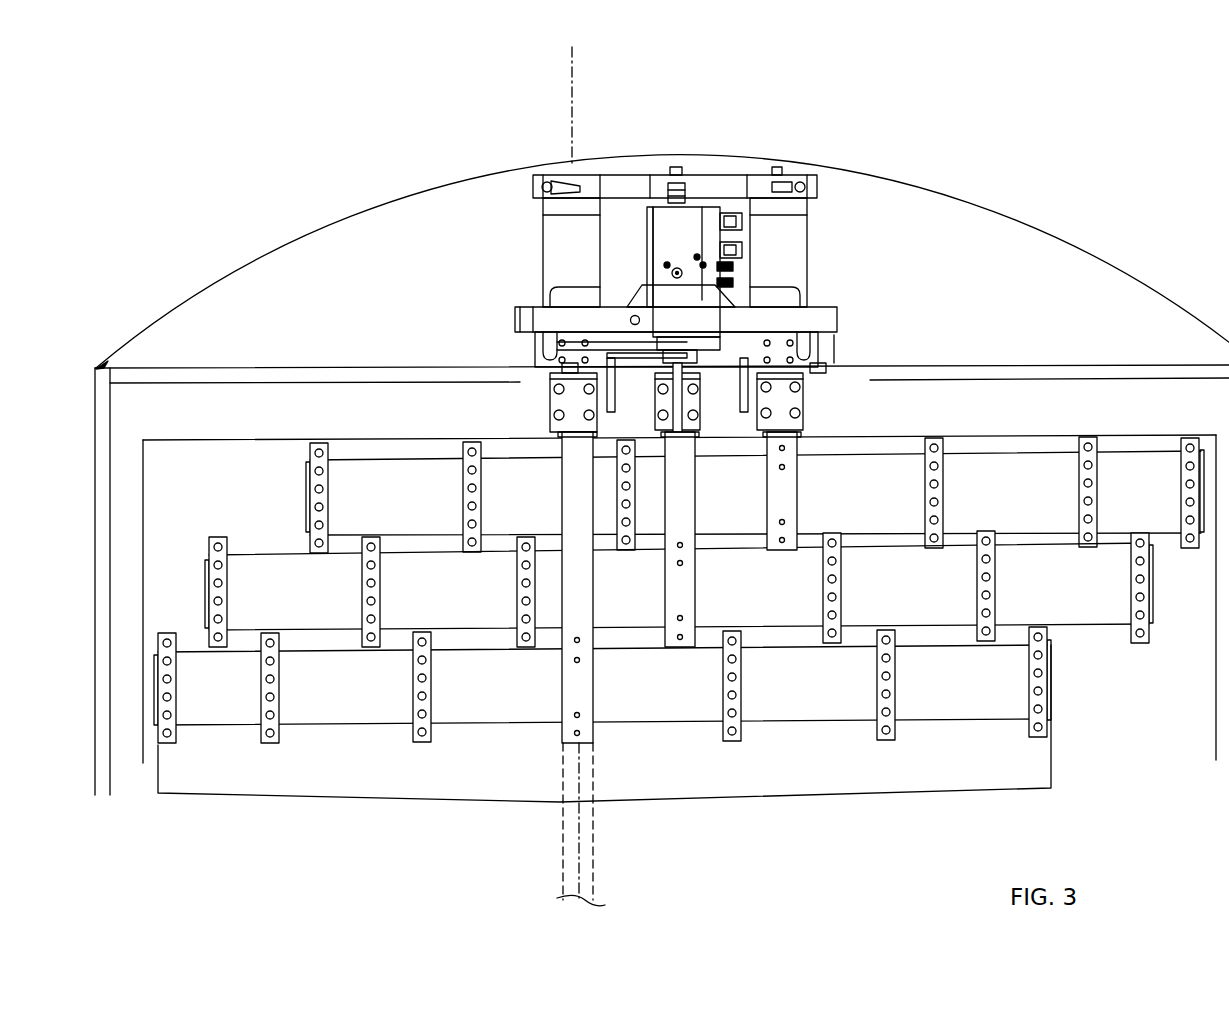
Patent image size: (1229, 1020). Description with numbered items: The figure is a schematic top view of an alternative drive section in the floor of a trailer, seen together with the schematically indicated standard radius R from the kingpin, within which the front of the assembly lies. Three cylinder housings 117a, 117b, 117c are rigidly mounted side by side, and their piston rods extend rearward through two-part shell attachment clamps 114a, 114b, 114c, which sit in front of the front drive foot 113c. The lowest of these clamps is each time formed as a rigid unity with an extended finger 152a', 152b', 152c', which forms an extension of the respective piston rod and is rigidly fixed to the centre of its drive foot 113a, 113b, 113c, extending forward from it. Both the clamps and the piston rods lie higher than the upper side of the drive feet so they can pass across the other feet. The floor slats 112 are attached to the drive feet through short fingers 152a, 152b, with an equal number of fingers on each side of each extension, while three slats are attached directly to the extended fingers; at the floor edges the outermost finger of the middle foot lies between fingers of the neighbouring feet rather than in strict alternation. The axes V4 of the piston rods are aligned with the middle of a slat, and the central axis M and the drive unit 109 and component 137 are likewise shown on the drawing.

The machine head assembly 109 is at (655, 157).
The slats 112 is at (588, 850).
The drive foot 113a is at (829, 690).
The drive foot 113b is at (934, 602).
The drive foot 113c is at (1018, 497).
The attachment clamp 114a is at (573, 402).
The attachment clamp 114b is at (700, 400).
The attachment clamp 114c is at (778, 402).
The cylinder housing 117a is at (572, 257).
The cylinder housing 117b is at (647, 208).
The cylinder housing 117c is at (790, 275).
The control unit 137 is at (685, 243).
The short fingers 152a is at (346, 699).
The short fingers 152b is at (268, 545).
The extended finger 152a' is at (607, 587).
The extended finger 152b' is at (724, 539).
The extended finger 152c' is at (821, 491).
The standard radius R is at (662, 475).
The axes of the piston rods V4 is at (597, 104).
The center axis M is at (580, 902).